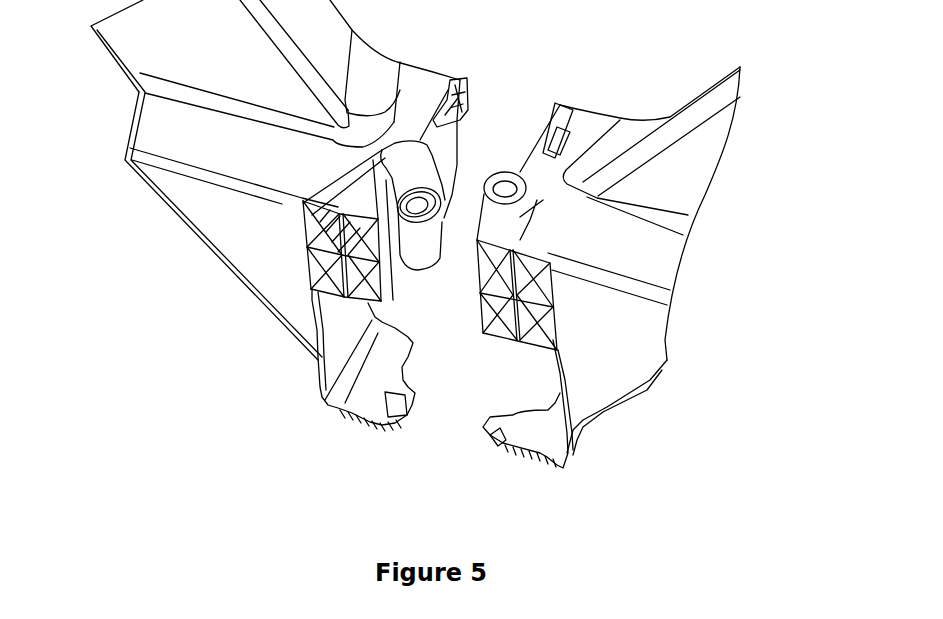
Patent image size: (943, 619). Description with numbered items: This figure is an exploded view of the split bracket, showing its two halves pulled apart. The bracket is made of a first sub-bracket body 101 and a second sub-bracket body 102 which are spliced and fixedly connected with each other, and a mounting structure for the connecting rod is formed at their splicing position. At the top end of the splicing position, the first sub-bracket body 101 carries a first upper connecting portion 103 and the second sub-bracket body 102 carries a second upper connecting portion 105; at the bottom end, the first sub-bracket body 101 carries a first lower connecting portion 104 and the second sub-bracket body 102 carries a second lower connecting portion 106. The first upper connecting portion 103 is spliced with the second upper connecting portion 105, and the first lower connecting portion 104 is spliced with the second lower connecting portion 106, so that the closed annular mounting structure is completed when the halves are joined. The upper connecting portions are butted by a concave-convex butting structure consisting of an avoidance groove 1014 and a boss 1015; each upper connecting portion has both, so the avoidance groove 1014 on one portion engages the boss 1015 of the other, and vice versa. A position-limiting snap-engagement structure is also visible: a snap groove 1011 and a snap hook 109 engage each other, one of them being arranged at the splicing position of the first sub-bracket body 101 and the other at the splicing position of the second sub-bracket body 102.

The first sub-bracket body 101 is at (207, 157).
The second sub-bracket body 102 is at (682, 157).
The first upper connecting portion 103 is at (403, 133).
The first lower connecting portion 104 is at (365, 387).
The second upper connecting portion 105 is at (540, 178).
The second lower connecting portion 106 is at (550, 428).
The snap hook 109 is at (470, 100).
The snap groove 1011 is at (378, 423).
The avoidance groove 1014 is at (402, 168).
The boss 1015 is at (463, 224).